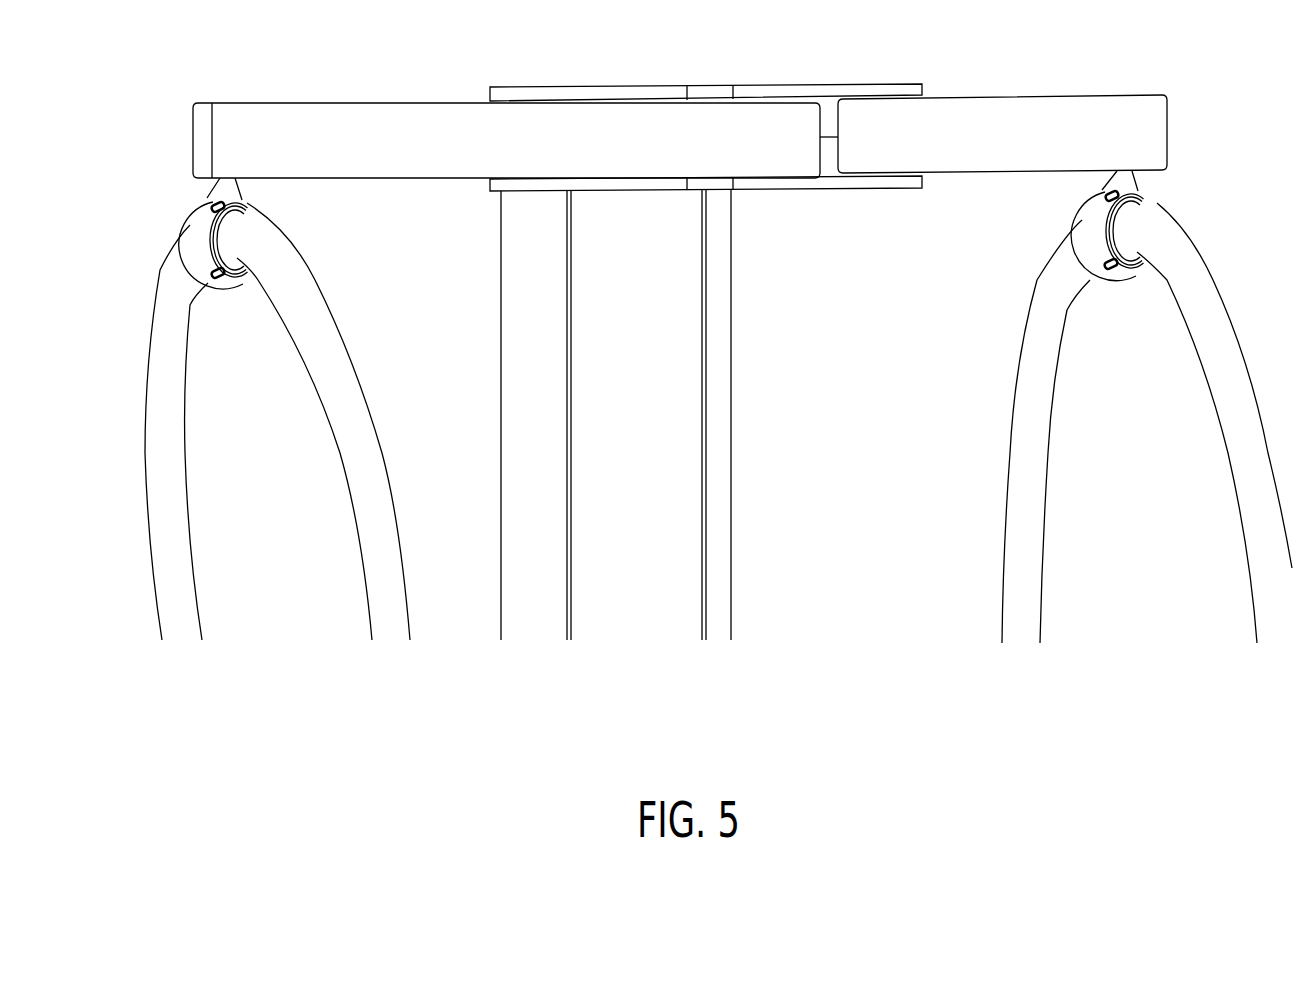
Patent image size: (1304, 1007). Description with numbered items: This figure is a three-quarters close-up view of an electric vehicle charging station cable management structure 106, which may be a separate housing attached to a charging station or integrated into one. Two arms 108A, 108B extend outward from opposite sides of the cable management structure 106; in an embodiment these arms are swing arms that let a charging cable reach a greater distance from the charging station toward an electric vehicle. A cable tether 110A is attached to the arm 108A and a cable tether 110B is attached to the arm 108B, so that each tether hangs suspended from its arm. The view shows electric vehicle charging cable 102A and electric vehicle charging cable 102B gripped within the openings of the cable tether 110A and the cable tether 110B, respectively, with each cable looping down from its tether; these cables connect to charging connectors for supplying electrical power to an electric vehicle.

The electric vehicle charging cable 102A is at (345, 453).
The electric vehicle charging cable 102B is at (1049, 483).
The electric vehicle charging station cable management structure 106 is at (664, 86).
The arm 108A is at (345, 100).
The arm 108B is at (974, 97).
The cable tether 110A is at (246, 291).
The cable tether 110B is at (1130, 276).